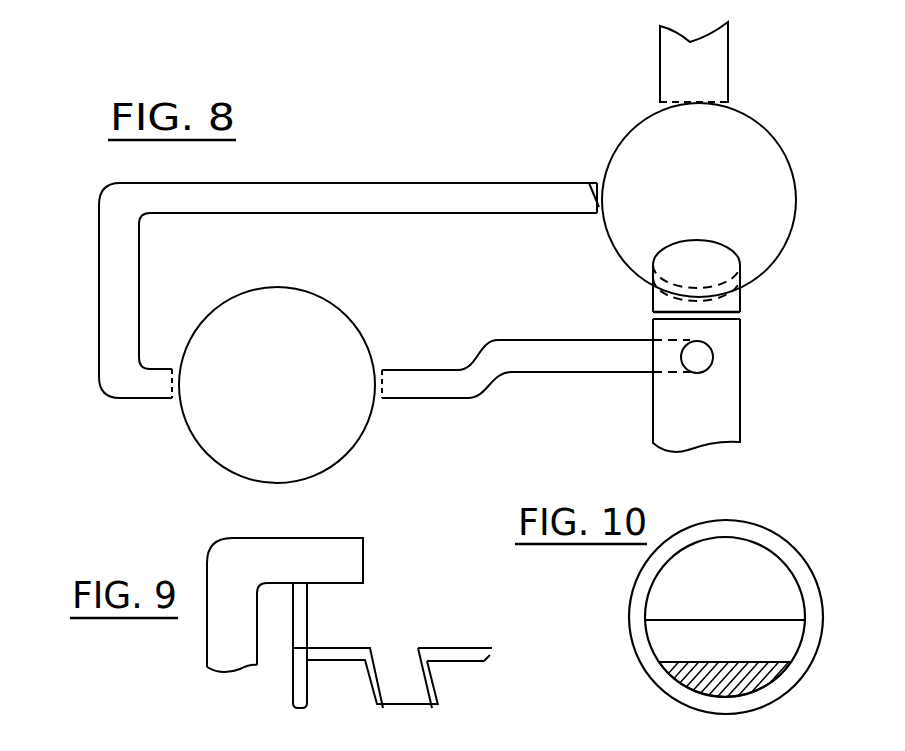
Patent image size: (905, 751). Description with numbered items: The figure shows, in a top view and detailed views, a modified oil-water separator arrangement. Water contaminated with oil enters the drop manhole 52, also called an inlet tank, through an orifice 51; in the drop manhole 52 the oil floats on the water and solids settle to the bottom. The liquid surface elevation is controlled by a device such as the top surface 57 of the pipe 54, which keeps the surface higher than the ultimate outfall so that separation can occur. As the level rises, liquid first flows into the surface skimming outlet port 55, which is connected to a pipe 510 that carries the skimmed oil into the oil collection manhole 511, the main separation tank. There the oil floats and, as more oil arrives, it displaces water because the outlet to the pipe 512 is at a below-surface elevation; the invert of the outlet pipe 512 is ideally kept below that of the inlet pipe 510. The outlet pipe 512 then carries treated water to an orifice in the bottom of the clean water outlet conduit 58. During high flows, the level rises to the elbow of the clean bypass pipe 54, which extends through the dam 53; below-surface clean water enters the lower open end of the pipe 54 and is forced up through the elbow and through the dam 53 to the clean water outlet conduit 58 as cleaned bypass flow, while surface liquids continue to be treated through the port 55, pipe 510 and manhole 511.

In FIG. 8, the orifice 51 is at (679, 86).
In FIG. 8, the drop manhole 52 is at (713, 198).
In FIG. 9, the drop manhole 52 is at (246, 719).
In FIG. 8, the dam 53 is at (740, 313).
In FIG. 9, the dam 53 is at (297, 633).
In FIG. 10, the dam 53 is at (690, 673).
In FIG. 8, the clean bypass pipe 54 is at (668, 262).
In FIG. 9, the clean bypass pipe 54 is at (242, 548).
In FIG. 10, the clean bypass pipe 54 is at (702, 653).
In FIG. 8, the surface skimming outlet port 55 is at (598, 195).
In FIG. 10, the top surface of pipe 57 is at (688, 622).
In FIG. 8, the clean water outlet conduit 58 is at (712, 426).
In FIG. 10, the clean water outlet conduit 58 is at (752, 540).
In FIG. 8, the pipe 510 is at (107, 215).
In FIG. 8, the oil collection manhole 511 is at (302, 402).
In FIG. 8, the outlet pipe 512 is at (508, 360).
In FIG. 9, the outlet pipe 512 is at (403, 663).